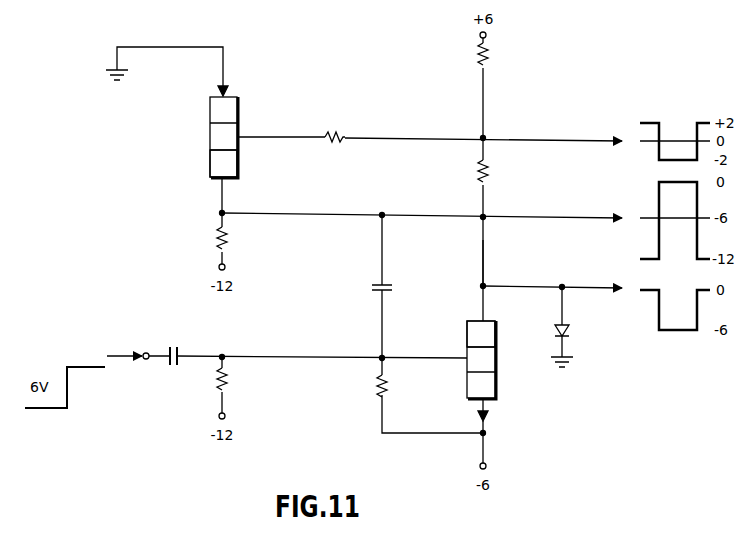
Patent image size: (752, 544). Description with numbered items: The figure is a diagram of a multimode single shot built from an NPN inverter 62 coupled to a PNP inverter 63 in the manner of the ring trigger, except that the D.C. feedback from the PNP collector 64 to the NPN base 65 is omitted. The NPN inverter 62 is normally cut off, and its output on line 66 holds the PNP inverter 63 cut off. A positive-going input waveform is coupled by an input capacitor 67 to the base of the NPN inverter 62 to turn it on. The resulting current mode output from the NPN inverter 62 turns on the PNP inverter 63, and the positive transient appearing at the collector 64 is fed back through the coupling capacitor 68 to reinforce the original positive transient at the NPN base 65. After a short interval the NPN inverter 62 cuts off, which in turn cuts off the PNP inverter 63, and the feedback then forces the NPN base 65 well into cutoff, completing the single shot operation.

The NPN inverter 62 is at (459, 360).
The PNP inverter 63 is at (208, 137).
The PNP collector 64 is at (240, 162).
The NPN base 65 is at (467, 351).
The output line 66 is at (477, 263).
The input capacitor 67 is at (178, 347).
The coupling capacitor 68 is at (372, 281).